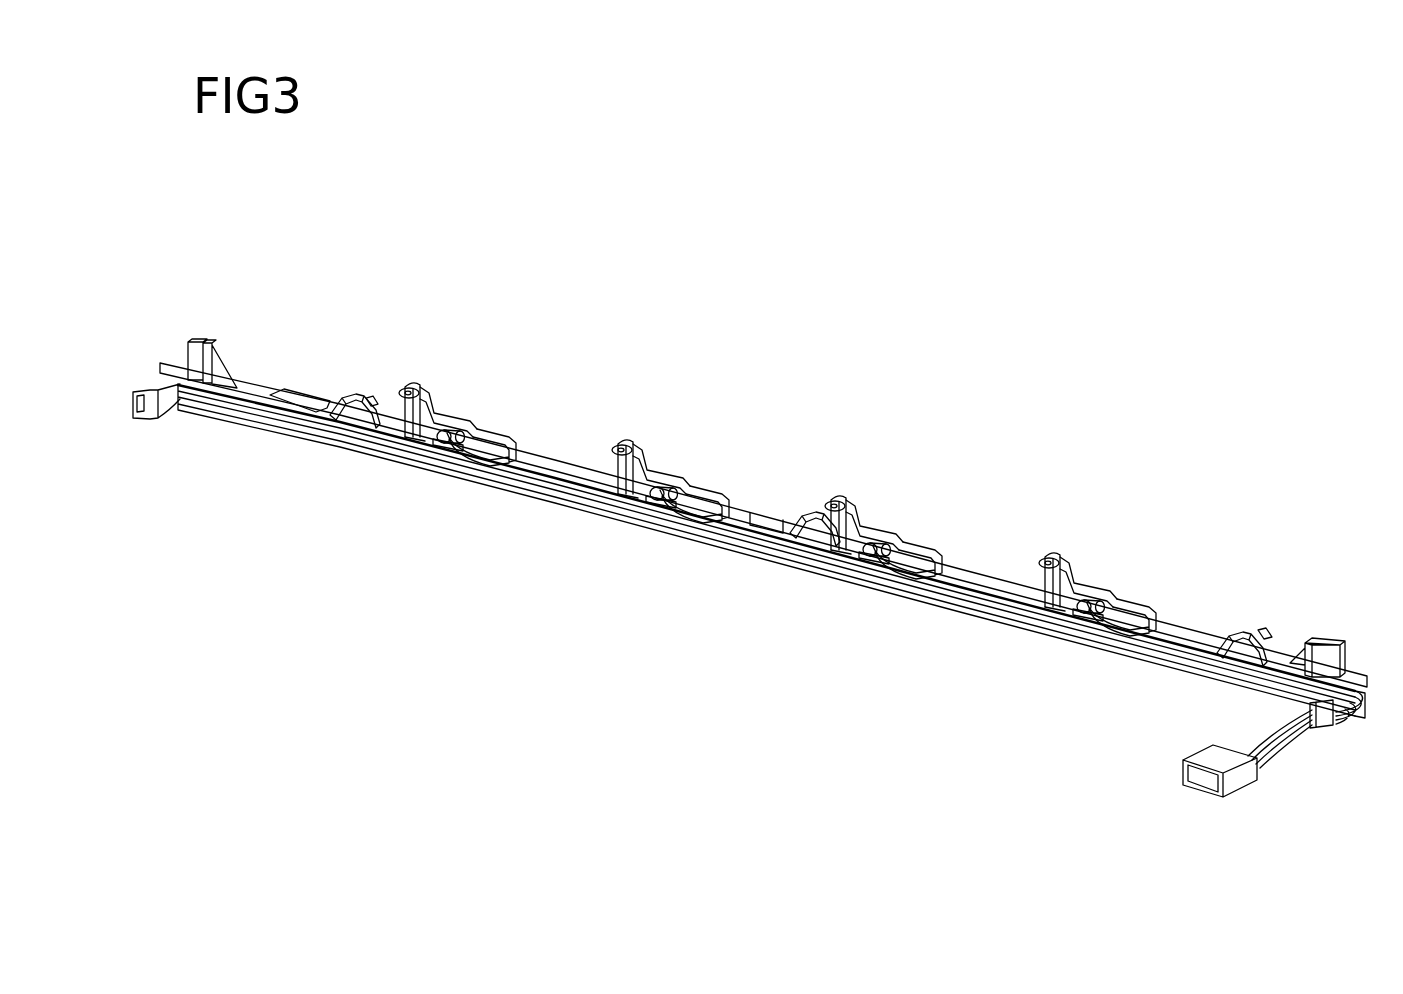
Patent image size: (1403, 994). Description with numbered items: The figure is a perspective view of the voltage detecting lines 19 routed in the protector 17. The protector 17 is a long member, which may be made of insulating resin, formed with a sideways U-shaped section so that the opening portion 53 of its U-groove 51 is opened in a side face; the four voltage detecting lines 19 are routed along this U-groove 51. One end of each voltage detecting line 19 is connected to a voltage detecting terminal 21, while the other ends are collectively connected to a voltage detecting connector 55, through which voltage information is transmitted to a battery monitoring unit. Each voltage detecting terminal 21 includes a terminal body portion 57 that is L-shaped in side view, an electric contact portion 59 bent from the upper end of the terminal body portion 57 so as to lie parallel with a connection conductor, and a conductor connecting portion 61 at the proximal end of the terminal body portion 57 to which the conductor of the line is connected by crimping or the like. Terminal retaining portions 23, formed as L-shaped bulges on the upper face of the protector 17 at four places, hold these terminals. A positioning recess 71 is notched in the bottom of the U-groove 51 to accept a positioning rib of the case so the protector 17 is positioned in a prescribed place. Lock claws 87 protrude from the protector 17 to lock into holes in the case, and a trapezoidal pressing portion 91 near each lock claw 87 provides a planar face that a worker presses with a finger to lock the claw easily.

The protector 17 is at (968, 562).
The voltage detecting lines 19 is at (547, 484).
The voltage detecting terminals 21 is at (419, 438).
The terminal retaining portions 23 is at (484, 430).
The U-groove 51 is at (313, 410).
The opening portion 53 is at (230, 406).
The voltage detecting connector 55 is at (1240, 790).
The terminal body portion 57 is at (443, 414).
The electric contact portion 59 is at (400, 393).
The conductor connecting portion 61 is at (445, 444).
The positioning recess 71 is at (768, 512).
The lock claw 87 is at (373, 395).
The pressing portion 91 is at (347, 391).